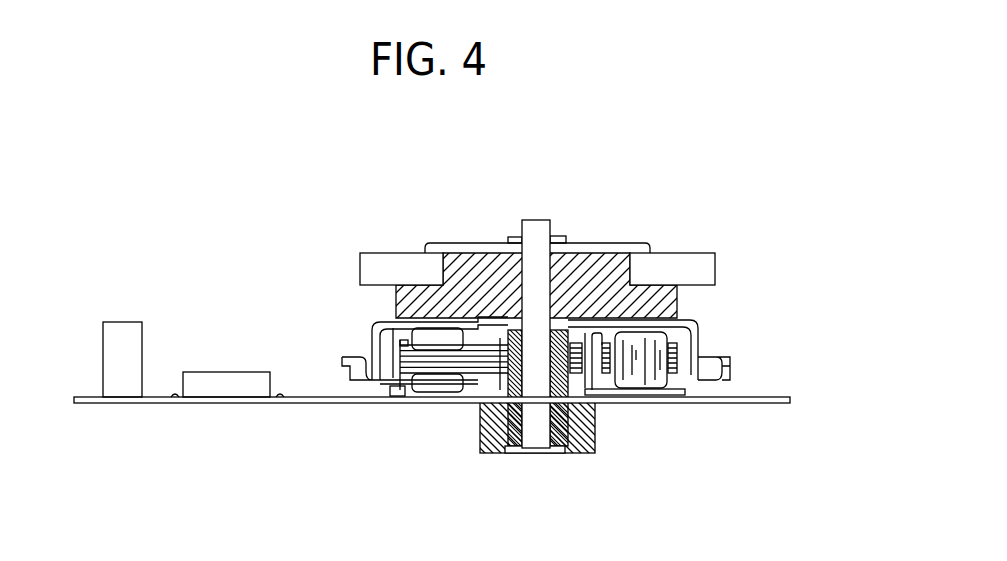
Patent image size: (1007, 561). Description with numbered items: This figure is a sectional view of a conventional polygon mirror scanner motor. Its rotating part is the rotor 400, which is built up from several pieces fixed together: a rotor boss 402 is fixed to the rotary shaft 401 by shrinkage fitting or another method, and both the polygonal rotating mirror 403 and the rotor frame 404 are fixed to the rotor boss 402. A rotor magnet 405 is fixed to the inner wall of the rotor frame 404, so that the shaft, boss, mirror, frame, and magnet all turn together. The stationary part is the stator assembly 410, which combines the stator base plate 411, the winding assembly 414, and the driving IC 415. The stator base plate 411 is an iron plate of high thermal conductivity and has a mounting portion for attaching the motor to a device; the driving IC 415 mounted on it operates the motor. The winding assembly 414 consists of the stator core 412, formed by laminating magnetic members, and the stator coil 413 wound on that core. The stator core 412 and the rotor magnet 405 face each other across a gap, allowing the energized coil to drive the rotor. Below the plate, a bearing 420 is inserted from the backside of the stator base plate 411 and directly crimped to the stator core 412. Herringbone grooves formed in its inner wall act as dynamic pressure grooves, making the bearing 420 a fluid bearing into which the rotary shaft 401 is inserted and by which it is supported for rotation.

The rotor 400 is at (860, 302).
The rotary shaft 401 is at (537, 225).
The rotor boss 402 is at (607, 265).
The polygonal rotating mirror 403 is at (692, 268).
The rotor frame 404 is at (697, 317).
The rotor magnet 405 is at (688, 352).
The stator assembly 410 is at (358, 215).
The stator base plate 411 is at (305, 397).
The stator core 412 is at (432, 360).
The stator coil 413 is at (430, 337).
The winding assembly 414 is at (298, 248).
The driving IC 415 is at (202, 380).
The bearing 420 is at (493, 427).